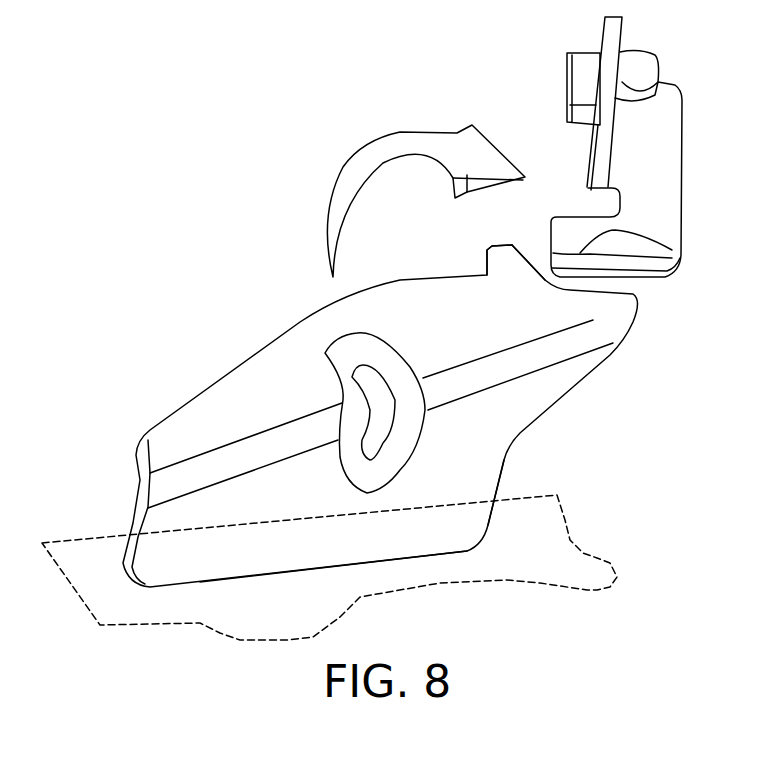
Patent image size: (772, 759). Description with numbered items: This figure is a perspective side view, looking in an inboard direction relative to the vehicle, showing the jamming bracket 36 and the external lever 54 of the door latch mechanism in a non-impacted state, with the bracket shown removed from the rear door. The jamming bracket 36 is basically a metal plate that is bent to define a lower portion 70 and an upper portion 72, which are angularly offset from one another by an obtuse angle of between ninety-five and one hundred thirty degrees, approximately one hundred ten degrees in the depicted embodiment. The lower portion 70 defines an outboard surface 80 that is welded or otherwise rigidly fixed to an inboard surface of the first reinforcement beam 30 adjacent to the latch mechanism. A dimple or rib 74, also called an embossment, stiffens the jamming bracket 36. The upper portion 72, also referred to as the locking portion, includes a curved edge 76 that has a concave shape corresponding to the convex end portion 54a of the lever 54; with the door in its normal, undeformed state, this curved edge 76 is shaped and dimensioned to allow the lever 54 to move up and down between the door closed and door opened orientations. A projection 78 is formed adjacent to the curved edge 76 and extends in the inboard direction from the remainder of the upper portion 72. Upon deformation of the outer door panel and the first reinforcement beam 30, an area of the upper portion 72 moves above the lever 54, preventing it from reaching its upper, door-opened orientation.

The first reinforcement beam 30 is at (601, 600).
The jamming bracket 36 is at (247, 350).
The external lever 54 is at (655, 208).
The end portion 54a is at (673, 248).
The lower portion 70 is at (467, 487).
The upper portion 72 is at (200, 423).
The dimple or rib 74 is at (403, 435).
The curved edge 76 is at (545, 278).
The projection 78 is at (500, 257).
The outboard surface 80 is at (245, 548).